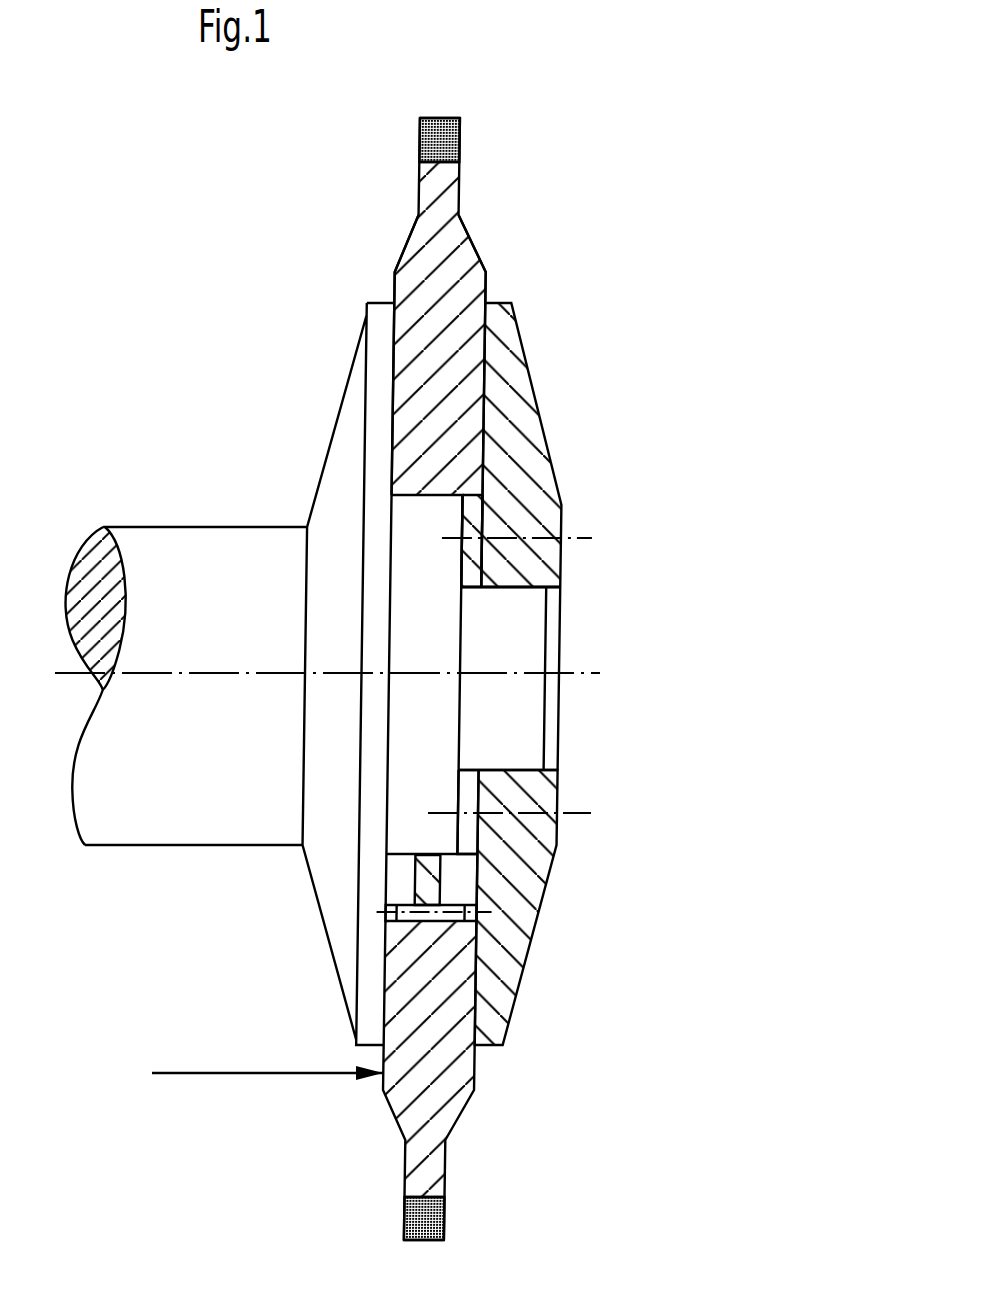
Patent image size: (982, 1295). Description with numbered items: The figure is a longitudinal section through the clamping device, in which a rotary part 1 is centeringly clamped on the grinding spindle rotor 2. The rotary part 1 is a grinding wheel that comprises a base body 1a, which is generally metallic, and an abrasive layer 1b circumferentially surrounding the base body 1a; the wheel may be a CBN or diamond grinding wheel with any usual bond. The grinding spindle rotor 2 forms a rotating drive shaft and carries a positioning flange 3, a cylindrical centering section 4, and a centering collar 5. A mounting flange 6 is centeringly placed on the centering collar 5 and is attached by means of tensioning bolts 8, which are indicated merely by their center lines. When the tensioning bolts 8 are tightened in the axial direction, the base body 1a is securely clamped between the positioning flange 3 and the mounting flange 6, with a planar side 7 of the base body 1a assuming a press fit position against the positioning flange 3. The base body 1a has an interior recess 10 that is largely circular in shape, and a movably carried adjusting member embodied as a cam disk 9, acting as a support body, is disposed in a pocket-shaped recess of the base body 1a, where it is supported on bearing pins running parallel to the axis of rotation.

The rotary part 1 is at (388, 232).
The base body 1a is at (442, 245).
The abrasive layer 1b is at (459, 133).
The grinding spindle rotor 2 is at (238, 603).
The positioning flange 3 is at (345, 914).
The cylindrical centering section 4 is at (432, 516).
The centering collar 5 is at (515, 636).
The mounting flange 6 is at (500, 373).
The planar side 7 is at (250, 1076).
The tensioning bolts 8 is at (565, 813).
The cam disk 9 is at (440, 869).
The interior recess 10 is at (470, 509).